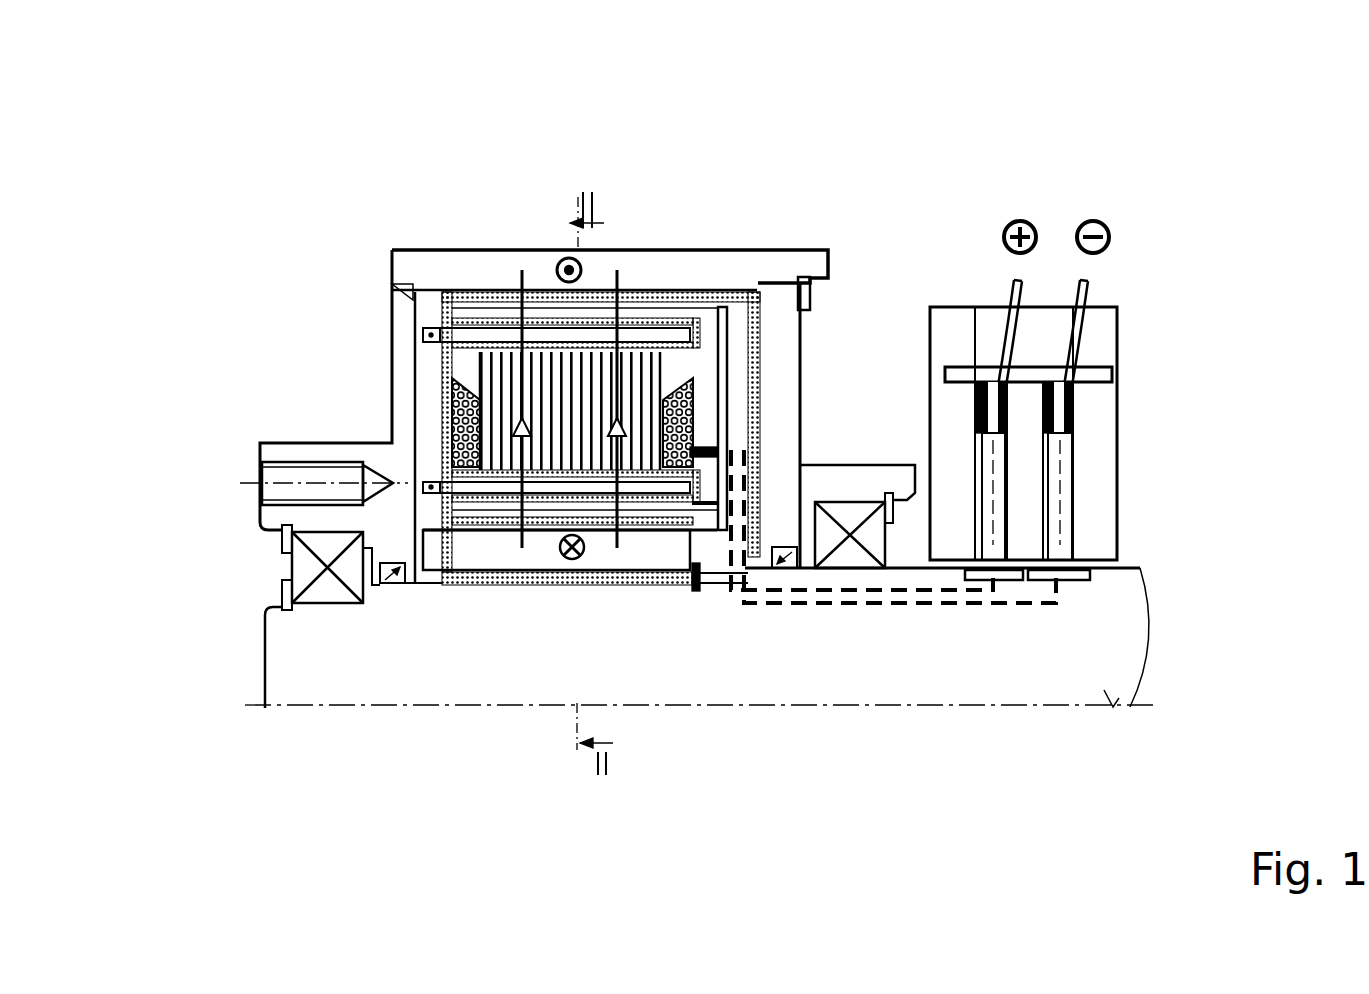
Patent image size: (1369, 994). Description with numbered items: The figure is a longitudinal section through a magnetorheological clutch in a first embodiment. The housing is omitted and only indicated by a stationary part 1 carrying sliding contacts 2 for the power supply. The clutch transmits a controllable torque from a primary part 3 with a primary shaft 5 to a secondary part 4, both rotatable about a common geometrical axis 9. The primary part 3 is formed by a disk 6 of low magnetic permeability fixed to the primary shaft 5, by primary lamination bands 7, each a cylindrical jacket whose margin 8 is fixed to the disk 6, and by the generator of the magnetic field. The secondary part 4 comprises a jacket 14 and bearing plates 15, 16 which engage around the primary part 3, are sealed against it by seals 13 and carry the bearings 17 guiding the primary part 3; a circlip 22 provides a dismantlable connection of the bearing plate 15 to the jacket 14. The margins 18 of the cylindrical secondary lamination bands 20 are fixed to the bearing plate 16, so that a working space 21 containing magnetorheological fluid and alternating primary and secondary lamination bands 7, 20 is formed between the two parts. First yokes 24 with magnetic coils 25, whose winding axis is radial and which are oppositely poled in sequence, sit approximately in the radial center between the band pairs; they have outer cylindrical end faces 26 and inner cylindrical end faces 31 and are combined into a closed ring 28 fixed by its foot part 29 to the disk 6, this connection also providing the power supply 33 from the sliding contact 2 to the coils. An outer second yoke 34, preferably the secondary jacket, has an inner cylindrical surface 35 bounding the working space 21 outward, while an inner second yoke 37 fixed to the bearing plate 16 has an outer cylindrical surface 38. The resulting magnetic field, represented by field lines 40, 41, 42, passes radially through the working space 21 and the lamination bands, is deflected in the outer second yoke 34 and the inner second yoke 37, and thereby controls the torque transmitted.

The stationary part 1 is at (1103, 450).
The sliding contacts 2 is at (1060, 538).
The primary part 3 is at (455, 610).
The secondary part 4 is at (405, 308).
The primary shaft 5 is at (1093, 597).
The disk 6 is at (735, 415).
The primary lamination bands 7 is at (632, 308).
The margin 8 is at (716, 313).
The geometrical axis 9 is at (1113, 707).
The seals 13 is at (784, 560).
The jacket 14 is at (542, 263).
The bearing plate 15 is at (788, 430).
The bearing plate 16 is at (405, 380).
The bearings 17 is at (890, 527).
The margins 18 is at (408, 294).
The secondary lamination bands 20 is at (500, 333).
The working space 21 is at (634, 346).
The circlip 22 is at (827, 250).
The first yokes 24 is at (523, 550).
The magnetic coils 25 is at (692, 382).
The outer cylindrical end faces 26 is at (682, 345).
The ring 28 is at (426, 420).
The foot part 29 is at (705, 403).
The inner cylindrical end faces 31 is at (880, 542).
The power supply 33 is at (810, 568).
The outer second yoke 34 is at (608, 268).
The inner coaxial cylindrical surface 35 is at (540, 448).
The inner second yoke 37 is at (645, 510).
The outer coaxial cylindrical surface 38 is at (587, 292).
The field lines 40 is at (520, 285).
The field lines 41 is at (569, 258).
The field lines 42 is at (596, 405).